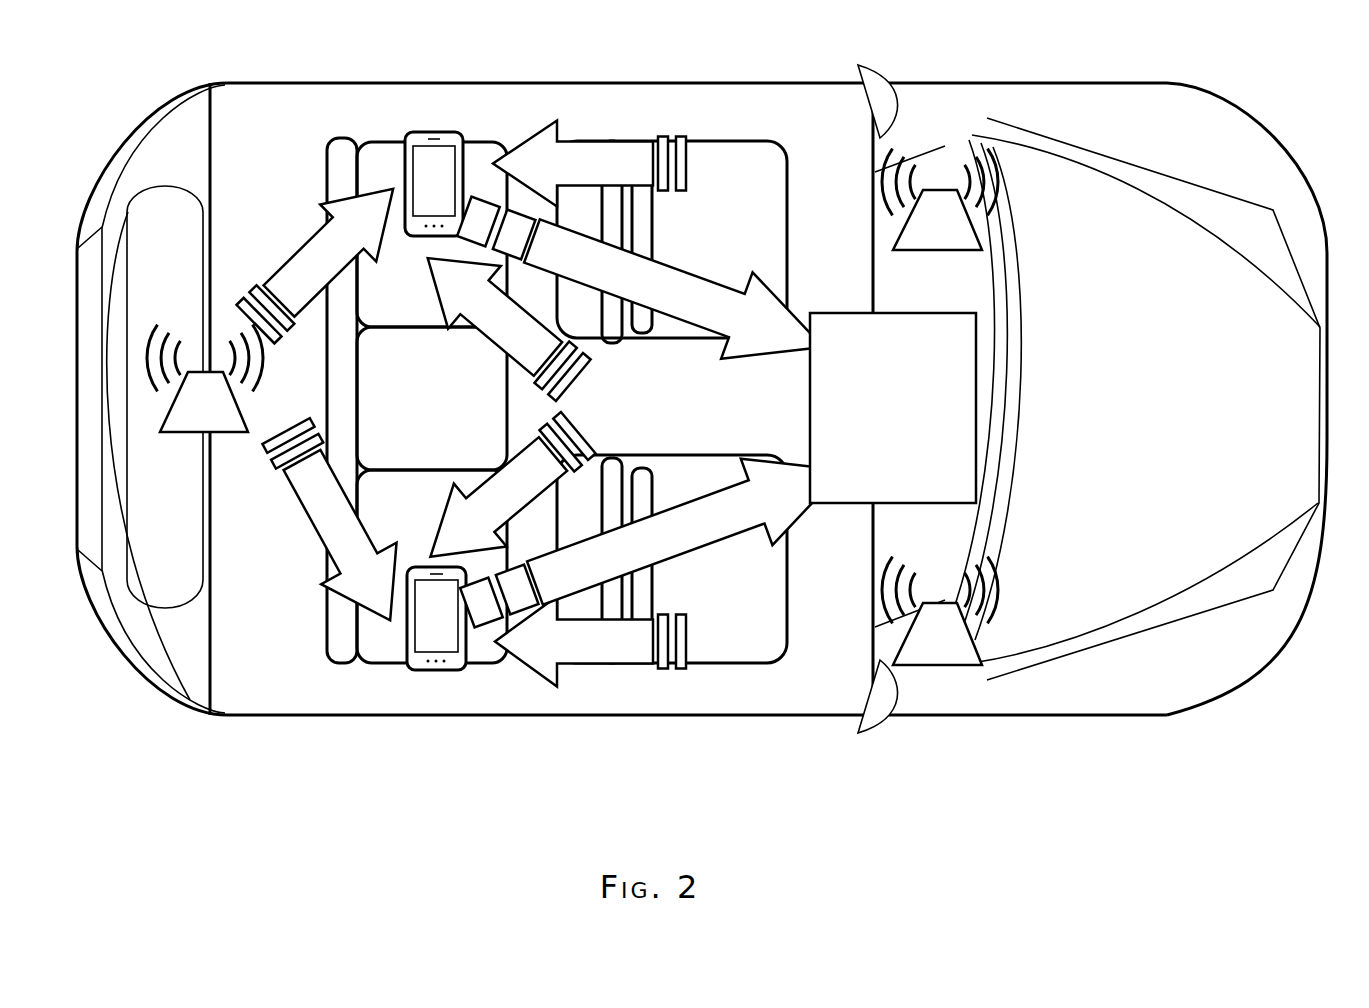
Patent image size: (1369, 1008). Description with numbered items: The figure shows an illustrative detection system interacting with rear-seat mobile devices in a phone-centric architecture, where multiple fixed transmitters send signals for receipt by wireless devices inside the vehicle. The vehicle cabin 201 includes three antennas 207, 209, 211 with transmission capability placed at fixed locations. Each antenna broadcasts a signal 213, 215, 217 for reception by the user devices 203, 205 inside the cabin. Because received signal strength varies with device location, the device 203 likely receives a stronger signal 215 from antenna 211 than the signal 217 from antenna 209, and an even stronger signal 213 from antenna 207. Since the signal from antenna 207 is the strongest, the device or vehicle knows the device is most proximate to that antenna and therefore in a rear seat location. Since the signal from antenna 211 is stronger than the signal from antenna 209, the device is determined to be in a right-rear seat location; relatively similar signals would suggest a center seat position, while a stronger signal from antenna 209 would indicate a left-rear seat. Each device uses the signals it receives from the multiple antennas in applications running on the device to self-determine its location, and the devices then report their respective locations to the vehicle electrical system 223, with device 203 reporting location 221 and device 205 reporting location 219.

The vehicle cabin 201 is at (270, 664).
The user device 203 is at (437, 642).
The user device 205 is at (433, 163).
The antenna 207 is at (218, 433).
The antenna 209 is at (998, 233).
The antenna 211 is at (986, 627).
The signal 213 is at (292, 254).
The signal 215 is at (592, 372).
The signal 217 is at (598, 143).
The location 219 is at (718, 278).
The location 221 is at (718, 536).
The vehicle electrical system 223 is at (978, 405).